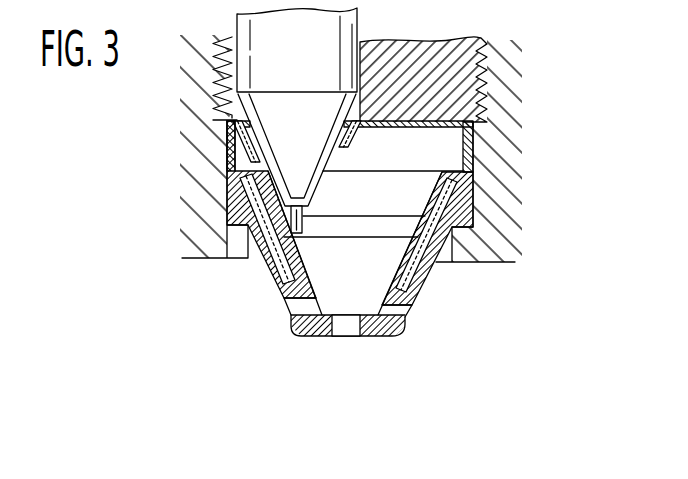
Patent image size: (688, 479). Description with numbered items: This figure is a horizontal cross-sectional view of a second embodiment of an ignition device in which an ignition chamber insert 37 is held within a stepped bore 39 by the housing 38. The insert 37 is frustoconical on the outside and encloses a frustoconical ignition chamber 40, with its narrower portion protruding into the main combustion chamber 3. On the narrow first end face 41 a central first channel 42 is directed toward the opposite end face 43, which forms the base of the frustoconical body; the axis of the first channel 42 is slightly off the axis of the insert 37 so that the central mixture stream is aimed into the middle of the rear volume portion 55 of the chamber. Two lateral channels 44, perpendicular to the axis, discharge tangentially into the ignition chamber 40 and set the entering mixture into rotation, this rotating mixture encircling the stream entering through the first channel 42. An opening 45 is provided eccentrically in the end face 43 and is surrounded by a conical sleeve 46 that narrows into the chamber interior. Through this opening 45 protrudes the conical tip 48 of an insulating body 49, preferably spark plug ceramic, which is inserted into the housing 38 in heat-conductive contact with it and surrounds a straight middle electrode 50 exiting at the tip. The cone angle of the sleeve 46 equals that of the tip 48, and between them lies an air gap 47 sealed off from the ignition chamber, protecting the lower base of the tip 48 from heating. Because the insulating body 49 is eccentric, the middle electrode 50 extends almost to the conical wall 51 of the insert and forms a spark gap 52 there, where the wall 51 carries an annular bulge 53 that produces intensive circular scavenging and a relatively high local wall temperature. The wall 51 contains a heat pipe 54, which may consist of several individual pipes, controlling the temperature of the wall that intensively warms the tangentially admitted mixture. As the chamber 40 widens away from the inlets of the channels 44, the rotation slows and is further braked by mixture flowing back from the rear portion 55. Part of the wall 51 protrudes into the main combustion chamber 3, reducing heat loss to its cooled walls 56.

The main combustion chamber 3 is at (497, 305).
The ignition chamber insert 37 is at (386, 341).
The housing 38 is at (421, 59).
The stepped bore 39 is at (460, 211).
The ignition chamber 40 is at (354, 208).
The first end face 41 is at (317, 337).
The first channel 42 is at (347, 327).
The end face 43 is at (470, 126).
The channels 44 is at (298, 308).
The opening 45 is at (350, 146).
The conical sleeve 46 is at (333, 154).
The air gap 47 is at (235, 132).
The tip 48 is at (297, 150).
The insulating body 49 is at (297, 50).
The middle electrode 50 is at (299, 225).
The wall 51 is at (378, 305).
The spark gap 52 is at (288, 232).
The annular bulge 53 is at (260, 260).
The heat pipe 54 is at (413, 270).
The rear volume portion 55 is at (448, 151).
The cooled walls 56 is at (495, 248).